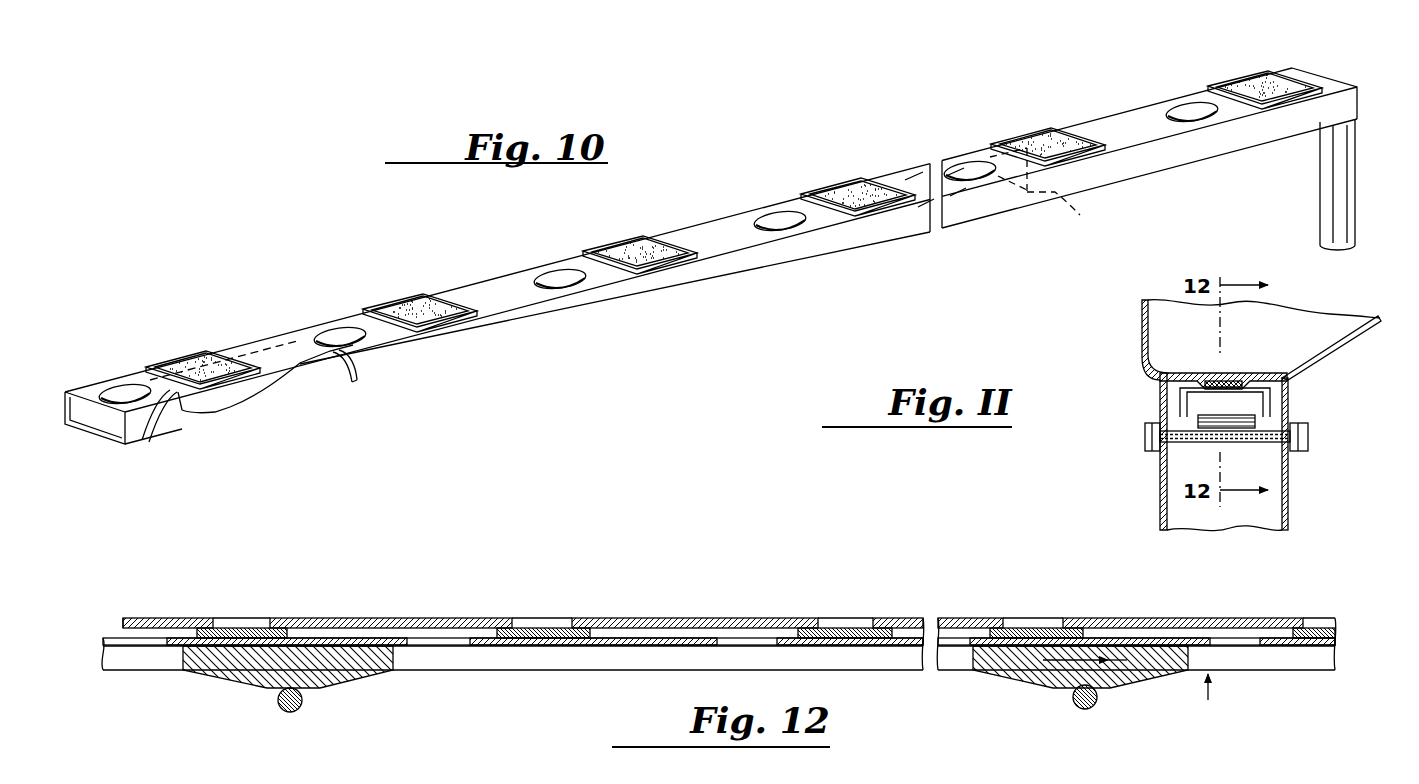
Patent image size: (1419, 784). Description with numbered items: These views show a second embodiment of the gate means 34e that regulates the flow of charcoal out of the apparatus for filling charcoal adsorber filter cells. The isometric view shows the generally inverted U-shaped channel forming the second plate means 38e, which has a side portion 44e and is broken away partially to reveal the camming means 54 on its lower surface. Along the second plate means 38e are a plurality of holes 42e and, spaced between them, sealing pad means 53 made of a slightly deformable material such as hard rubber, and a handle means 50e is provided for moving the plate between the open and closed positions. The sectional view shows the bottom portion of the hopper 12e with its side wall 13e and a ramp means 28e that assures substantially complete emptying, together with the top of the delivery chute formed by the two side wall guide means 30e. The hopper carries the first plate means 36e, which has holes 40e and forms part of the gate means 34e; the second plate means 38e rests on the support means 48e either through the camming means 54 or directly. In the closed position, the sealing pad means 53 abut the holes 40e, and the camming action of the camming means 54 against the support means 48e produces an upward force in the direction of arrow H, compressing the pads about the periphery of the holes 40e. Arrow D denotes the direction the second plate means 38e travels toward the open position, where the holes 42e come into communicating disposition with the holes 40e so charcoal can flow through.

In FIG. 11, the hopper 12e is at (1335, 328).
In FIG. 11, the side wall 13e is at (1142, 318).
In FIG. 11, the ramp means 28e is at (1358, 337).
In FIG. 11, the side wall guide means 30e is at (1160, 497).
In FIG. 11, the gate means 34e is at (1156, 388).
In FIG. 11, the first plate means 36e is at (1140, 358).
In FIG. 12, the first plate means 36e is at (703, 618).
In FIG. 10, the second plate means 38e is at (507, 297).
In FIG. 11, the second plate means 38e is at (1272, 404).
In FIG. 12, the second plate means 38e is at (598, 646).
In FIG. 11, the holes 40e is at (1232, 374).
In FIG. 12, the holes 40e is at (250, 618).
In FIG. 10, the holes 42e is at (122, 385).
In FIG. 12, the holes 42e is at (150, 646).
In FIG. 10, the side portion 44e is at (750, 264).
In FIG. 12, the side portion 44e is at (630, 660).
In FIG. 11, the support means 48e is at (1290, 440).
In FIG. 12, the support means 48e is at (300, 702).
In FIG. 10, the handle means 50e is at (1333, 190).
In FIG. 10, the sealing pad means 53 is at (203, 365).
In FIG. 11, the sealing pad means 53 is at (1292, 380).
In FIG. 12, the sealing pad means 53 is at (232, 628).
In FIG. 10, the camming means 54 is at (258, 396).
In FIG. 11, the camming means 54 is at (1195, 406).
In FIG. 12, the camming means 54 is at (255, 672).
In FIG. 12, the direction arrow D is at (1115, 660).
In FIG. 12, the upward force arrow H is at (1210, 700).